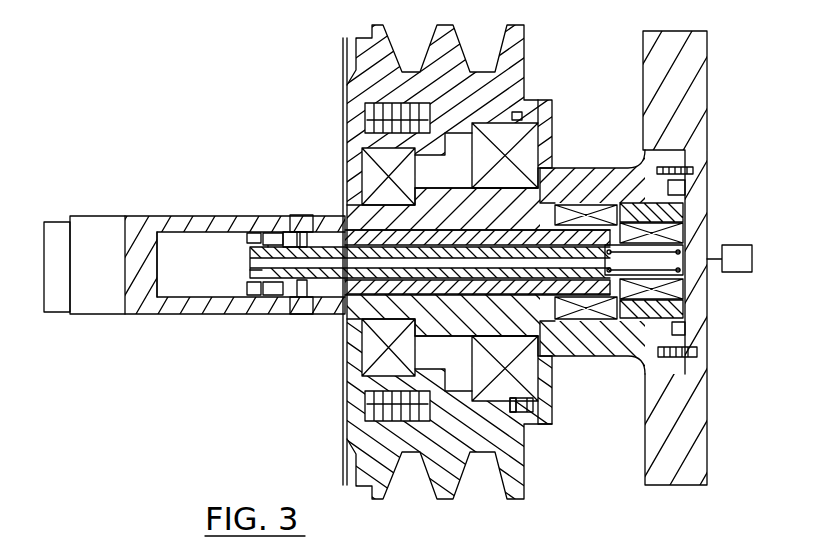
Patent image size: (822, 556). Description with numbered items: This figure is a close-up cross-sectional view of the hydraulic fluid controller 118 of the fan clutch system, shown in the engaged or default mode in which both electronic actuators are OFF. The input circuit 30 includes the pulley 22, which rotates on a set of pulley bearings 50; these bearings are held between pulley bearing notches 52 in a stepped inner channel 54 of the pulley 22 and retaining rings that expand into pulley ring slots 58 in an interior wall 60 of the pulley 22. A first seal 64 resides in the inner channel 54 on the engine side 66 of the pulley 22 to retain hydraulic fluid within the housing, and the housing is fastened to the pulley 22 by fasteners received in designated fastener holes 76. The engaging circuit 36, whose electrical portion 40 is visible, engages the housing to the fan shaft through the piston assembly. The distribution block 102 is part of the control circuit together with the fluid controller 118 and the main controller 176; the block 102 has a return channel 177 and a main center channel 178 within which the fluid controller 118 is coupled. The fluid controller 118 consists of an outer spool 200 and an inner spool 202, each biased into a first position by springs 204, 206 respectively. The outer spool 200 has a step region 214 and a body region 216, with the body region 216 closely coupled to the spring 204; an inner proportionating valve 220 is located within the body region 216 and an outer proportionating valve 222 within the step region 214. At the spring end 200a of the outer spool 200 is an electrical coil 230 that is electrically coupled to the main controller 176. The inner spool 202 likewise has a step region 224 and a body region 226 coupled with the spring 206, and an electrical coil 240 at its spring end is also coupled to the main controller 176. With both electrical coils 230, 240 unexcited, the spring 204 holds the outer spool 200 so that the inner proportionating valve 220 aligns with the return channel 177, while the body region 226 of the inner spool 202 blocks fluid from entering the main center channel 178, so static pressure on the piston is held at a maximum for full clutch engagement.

The pulley 22 is at (383, 26).
The input circuit 30 is at (563, 126).
The engaging circuit 36 is at (711, 350).
The electrical portion 40 is at (733, 195).
The pulley bearings 50 is at (519, 122).
The pulley bearing notches 52 is at (490, 124).
The stepped inner channel 54 is at (460, 385).
The pulley ring slots 58 is at (515, 405).
The interior wall 60 is at (455, 178).
The first seal 64 is at (530, 413).
The engine side 66 is at (541, 402).
The fastener holes 76 is at (345, 407).
The distribution block 102 is at (137, 216).
The hydraulic fluid controller 118 is at (709, 178).
The main controller 176 is at (740, 226).
The return channel 177 is at (300, 213).
The main center channel 178 is at (200, 268).
The outer spool 200 is at (548, 162).
The spring end 200a is at (547, 188).
The inner spool 202 is at (252, 298).
The spring 204 is at (585, 205).
The spring 206 is at (588, 300).
The step region 214 is at (247, 215).
The body region 216 is at (330, 213).
The inner proportionating valve 220 is at (297, 213).
The outer proportionating valve 222 is at (262, 233).
The step region 224 is at (250, 278).
The body region 226 is at (313, 315).
The electrical coil 230 is at (605, 240).
The electrical coil 240 is at (685, 283).